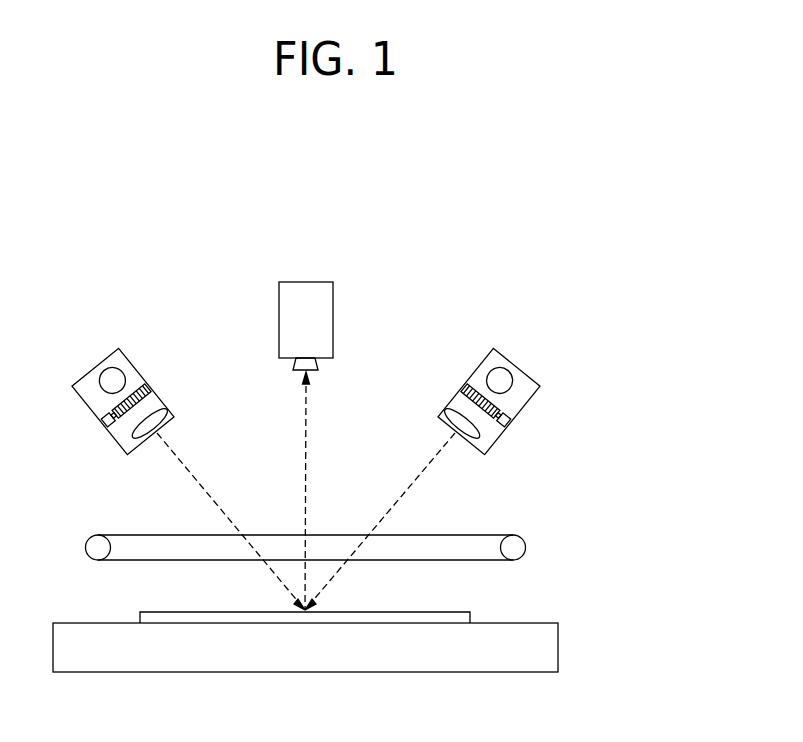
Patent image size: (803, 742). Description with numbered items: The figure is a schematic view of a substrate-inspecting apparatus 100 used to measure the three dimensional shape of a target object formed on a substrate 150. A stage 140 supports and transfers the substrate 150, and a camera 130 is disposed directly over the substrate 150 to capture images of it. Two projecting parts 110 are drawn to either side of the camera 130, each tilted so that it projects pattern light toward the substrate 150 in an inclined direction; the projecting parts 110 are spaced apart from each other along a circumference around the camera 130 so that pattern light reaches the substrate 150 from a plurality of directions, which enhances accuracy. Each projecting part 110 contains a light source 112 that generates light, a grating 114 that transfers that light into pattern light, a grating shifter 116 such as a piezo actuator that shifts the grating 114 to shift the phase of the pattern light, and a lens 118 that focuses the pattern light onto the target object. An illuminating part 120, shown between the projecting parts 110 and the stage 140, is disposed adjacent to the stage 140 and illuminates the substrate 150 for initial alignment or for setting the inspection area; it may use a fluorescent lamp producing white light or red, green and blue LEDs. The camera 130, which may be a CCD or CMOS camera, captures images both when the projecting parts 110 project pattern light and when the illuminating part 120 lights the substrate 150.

The substrate-inspecting apparatus 100 is at (562, 208).
The projecting part 110 is at (533, 375).
The light source 112 is at (505, 373).
The grating 114 is at (460, 392).
The grating shifter 116 is at (508, 428).
The lens 118 is at (457, 421).
The illuminating part 120 is at (515, 543).
The camera 130 is at (304, 290).
The stage 140 is at (550, 647).
The substrate 150 is at (472, 617).